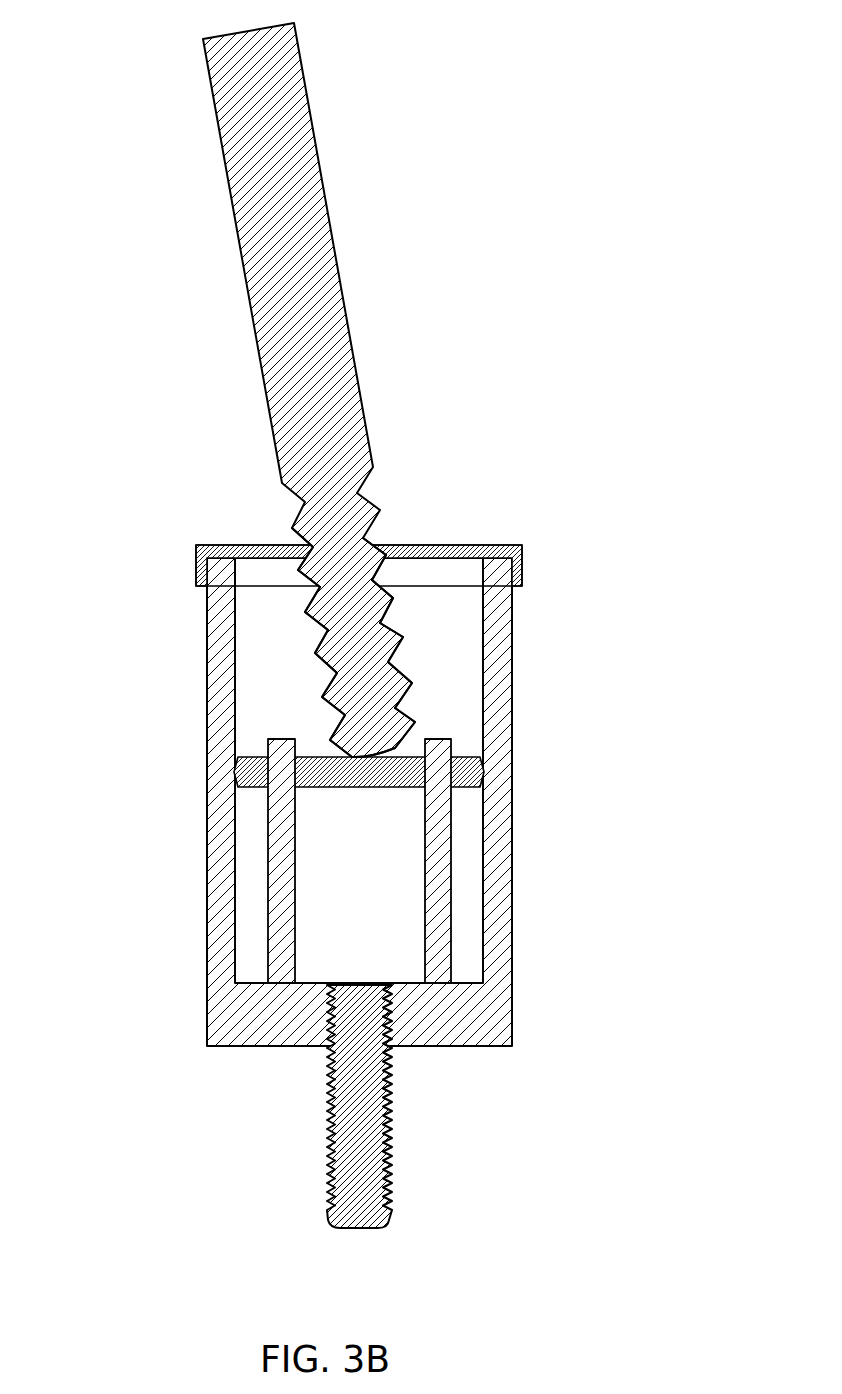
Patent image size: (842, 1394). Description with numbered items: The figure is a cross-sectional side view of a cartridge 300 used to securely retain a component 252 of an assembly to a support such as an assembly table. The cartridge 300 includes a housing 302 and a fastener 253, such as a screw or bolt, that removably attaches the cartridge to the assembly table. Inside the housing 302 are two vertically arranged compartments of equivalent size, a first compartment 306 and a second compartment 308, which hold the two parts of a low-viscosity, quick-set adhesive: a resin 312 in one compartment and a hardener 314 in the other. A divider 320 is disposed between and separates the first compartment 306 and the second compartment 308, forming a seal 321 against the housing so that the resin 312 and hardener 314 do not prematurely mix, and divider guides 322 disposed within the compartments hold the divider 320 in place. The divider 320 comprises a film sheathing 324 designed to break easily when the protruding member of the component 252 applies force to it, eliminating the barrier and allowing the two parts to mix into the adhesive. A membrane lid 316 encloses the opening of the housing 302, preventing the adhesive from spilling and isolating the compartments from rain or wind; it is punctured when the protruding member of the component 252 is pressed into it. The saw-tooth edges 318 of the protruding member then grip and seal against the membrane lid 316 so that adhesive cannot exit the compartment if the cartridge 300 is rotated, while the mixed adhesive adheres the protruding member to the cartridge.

The cartridge 300 is at (119, 89).
The component 252 is at (315, 210).
The fastener 253 is at (367, 1150).
The housing 302 is at (233, 723).
The first compartment 306 is at (257, 672).
The second compartment 308 is at (257, 938).
The resin 312 is at (450, 657).
The hardener 314 is at (390, 935).
The membrane lid 316 is at (470, 545).
The saw-tooth edges 318 is at (380, 587).
The divider 320 is at (310, 775).
The seal 321 is at (472, 773).
The divider guide 322 is at (297, 845).
The film sheathing 324 is at (320, 757).